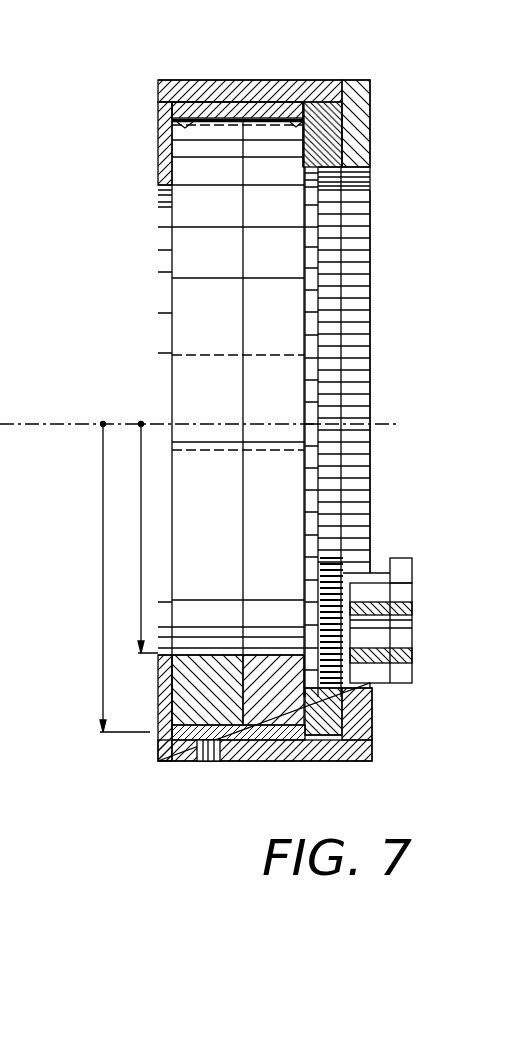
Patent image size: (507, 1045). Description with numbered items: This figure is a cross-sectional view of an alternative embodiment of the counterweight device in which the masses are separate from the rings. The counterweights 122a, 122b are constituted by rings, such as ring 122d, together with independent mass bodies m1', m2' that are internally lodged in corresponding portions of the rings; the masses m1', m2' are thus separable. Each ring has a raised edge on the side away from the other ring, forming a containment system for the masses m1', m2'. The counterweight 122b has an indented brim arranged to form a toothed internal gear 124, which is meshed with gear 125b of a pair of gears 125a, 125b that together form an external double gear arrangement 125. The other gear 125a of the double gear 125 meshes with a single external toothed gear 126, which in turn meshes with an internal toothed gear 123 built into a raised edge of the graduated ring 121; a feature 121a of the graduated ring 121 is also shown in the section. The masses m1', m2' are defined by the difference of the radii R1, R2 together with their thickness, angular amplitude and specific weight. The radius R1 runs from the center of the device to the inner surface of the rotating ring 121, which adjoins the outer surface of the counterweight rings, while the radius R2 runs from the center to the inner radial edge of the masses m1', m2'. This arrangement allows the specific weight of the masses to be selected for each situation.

The graduated ring 121 is at (352, 116).
The drain hole 121a is at (214, 761).
The mass counterweight 122a is at (166, 284).
The mass counterweight 122b is at (305, 102).
The ring 122d is at (181, 118).
The internal toothed gear 123 is at (372, 204).
The toothed internal gear 124 is at (321, 200).
The external double gear arrangement 125 is at (413, 578).
The toothed gear 125a is at (400, 558).
The toothed gear 125b is at (329, 565).
The single external toothed gear 126 is at (400, 655).
The mass body m1' is at (207, 648).
The mass body m2' is at (273, 648).
The radius R1 is at (111, 577).
The radius R2 is at (135, 538).